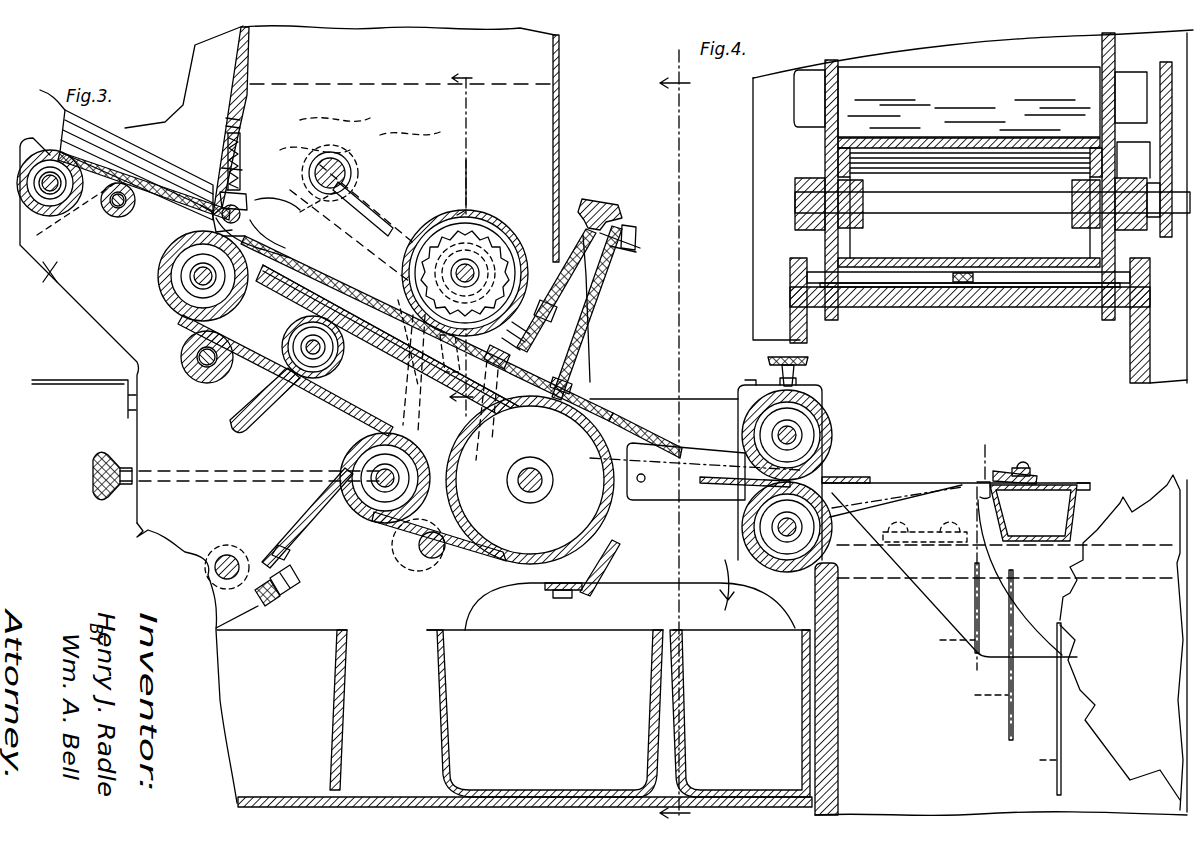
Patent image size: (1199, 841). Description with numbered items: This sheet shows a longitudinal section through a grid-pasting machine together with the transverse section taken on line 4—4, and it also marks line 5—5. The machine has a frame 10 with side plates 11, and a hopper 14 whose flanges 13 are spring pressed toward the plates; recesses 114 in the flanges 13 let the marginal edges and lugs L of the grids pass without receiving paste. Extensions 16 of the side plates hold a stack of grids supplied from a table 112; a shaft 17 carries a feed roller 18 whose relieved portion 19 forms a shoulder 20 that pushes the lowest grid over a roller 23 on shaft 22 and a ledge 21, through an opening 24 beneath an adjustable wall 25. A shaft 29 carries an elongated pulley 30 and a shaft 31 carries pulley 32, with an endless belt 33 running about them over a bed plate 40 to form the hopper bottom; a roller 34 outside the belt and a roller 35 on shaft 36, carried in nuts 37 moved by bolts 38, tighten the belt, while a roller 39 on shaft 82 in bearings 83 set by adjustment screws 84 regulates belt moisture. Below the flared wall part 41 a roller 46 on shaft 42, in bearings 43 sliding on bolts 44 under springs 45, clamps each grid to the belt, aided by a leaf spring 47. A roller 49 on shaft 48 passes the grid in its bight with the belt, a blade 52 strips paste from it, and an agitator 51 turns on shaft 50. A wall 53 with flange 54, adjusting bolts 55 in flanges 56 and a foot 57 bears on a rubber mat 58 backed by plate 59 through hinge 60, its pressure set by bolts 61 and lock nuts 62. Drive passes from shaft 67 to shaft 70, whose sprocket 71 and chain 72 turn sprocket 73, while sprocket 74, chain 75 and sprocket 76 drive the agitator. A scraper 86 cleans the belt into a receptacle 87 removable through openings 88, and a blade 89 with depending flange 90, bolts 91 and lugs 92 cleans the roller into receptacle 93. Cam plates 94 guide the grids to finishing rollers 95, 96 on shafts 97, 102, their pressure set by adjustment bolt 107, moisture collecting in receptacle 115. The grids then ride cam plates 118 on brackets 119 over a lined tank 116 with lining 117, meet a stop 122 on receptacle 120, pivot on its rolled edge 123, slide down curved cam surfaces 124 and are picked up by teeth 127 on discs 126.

In FIG. 3, the section line 4— 4 is at (459, 238).
In FIG. 3, the section line 5— 5 is at (679, 427).
In FIG. 3, the frame 10 is at (643, 570).
In FIG. 3, the side plates 11 is at (187, 663).
In FIG. 4, the flanges 13 is at (805, 250).
In FIG. 3, the hopper 14 is at (562, 116).
In FIG. 4, the hopper 14 is at (1120, 55).
In FIG. 3, the extensions 16 is at (50, 280).
In FIG. 3, the shaft 17 is at (47, 196).
In FIG. 3, the feed roller 18 is at (52, 200).
In FIG. 3, the relieved portion 19 is at (78, 207).
In FIG. 3, the shoulder 20 is at (60, 152).
In FIG. 3, the ledge 21 is at (185, 210).
In FIG. 3, the shaft 22 is at (110, 213).
In FIG. 3, the roller 23 is at (116, 208).
In FIG. 3, the opening 24 is at (222, 212).
In FIG. 3, the wall 25 is at (225, 68).
In FIG. 3, the shaft 29 is at (190, 285).
In FIG. 3, the elongated pulley 30 is at (158, 282).
In FIG. 3, the shaft 31 is at (528, 495).
In FIG. 3, the elongated pulley 32 is at (503, 402).
In FIG. 3, the endless belt 33 is at (398, 352).
In FIG. 4, the endless belt 33 is at (1055, 307).
In FIG. 3, the roller 34 is at (215, 380).
In FIG. 3, the roller 35 is at (295, 334).
In FIG. 3, the shaft 36 is at (300, 347).
In FIG. 3, the nuts 37 is at (305, 315).
In FIG. 3, the adjustment bolts 38 is at (278, 405).
In FIG. 3, the roller 39 is at (345, 470).
In FIG. 3, the bed plate 40 is at (400, 340).
In FIG. 4, the bed plate 40 is at (1005, 307).
In FIG. 3, the inwardly flared part 41 is at (279, 204).
In FIG. 3, the shaft 42 is at (220, 196).
In FIG. 3, the bearings 43 is at (224, 170).
In FIG. 3, the bolts 44 is at (228, 124).
In FIG. 3, the springs 45 is at (226, 140).
In FIG. 3, the roller 46 is at (255, 215).
In FIG. 3, the leaf spring 47 is at (312, 248).
In FIG. 3, the shaft 48 is at (478, 262).
In FIG. 4, the shaft 48 is at (1000, 138).
In FIG. 3, the roller 49 is at (470, 220).
In FIG. 3, the shaft 50 is at (330, 158).
In FIG. 3, the agitator 51 is at (385, 228).
In FIG. 4, the agitator 51 is at (1048, 78).
In FIG. 3, the blade 52 is at (451, 363).
In FIG. 4, the blade 52 is at (1040, 272).
In FIG. 3, the wall 53 is at (530, 336).
In FIG. 3, the flange 54 is at (632, 255).
In FIG. 3, the adjusting bolts 55 is at (600, 200).
In FIG. 3, the flanges 56 is at (578, 290).
In FIG. 3, the foot 57 is at (552, 314).
In FIG. 3, the mat 58 is at (600, 400).
In FIG. 3, the plate 59 is at (574, 387).
In FIG. 3, the hinge 60 is at (512, 358).
In FIG. 3, the adjusting bolts 61 is at (597, 310).
In FIG. 3, the lock nuts 62 is at (638, 240).
In FIG. 3, the shaft 67 is at (238, 555).
In FIG. 3, the shaft 70 is at (428, 560).
In FIG. 3, the sprocket 71 is at (470, 470).
In FIG. 3, the chain 72 is at (420, 416).
In FIG. 3, the sprocket 73 is at (419, 344).
In FIG. 3, the sprocket 74 is at (453, 202).
In FIG. 3, the chain 75 is at (458, 174).
In FIG. 4, the chain 75 is at (1160, 135).
In FIG. 3, the sprocket 76 is at (360, 135).
In FIG. 3, the shaft 82 is at (385, 510).
In FIG. 3, the bearings 83 is at (358, 452).
In FIG. 3, the adjustment screws 84 is at (125, 466).
In FIG. 3, the scraper 86 is at (610, 585).
In FIG. 3, the receptacle 87 is at (445, 736).
In FIG. 3, the openings 88 is at (720, 573).
In FIG. 3, the blade 89 is at (300, 520).
In FIG. 3, the depending flange 90 is at (280, 596).
In FIG. 3, the adjustment bolts 91 is at (292, 552).
In FIG. 3, the lugs 92 is at (300, 576).
In FIG. 3, the receptacle 93 is at (335, 720).
In FIG. 3, the cam plates 94 is at (670, 488).
In FIG. 3, the roller 95 is at (738, 430).
In FIG. 3, the roller 96 is at (745, 540).
In FIG. 3, the shaft 97 is at (800, 430).
In FIG. 3, the shaft 102 is at (775, 545).
In FIG. 3, the adjustment bolt 107 is at (796, 372).
In FIG. 3, the table 112 is at (115, 380).
In FIG. 4, the recesses 114 is at (822, 307).
In FIG. 3, the receptacle 115 is at (770, 630).
In FIG. 3, the lined tank 116 is at (840, 770).
In FIG. 3, the lining 117 is at (840, 725).
In FIG. 3, the cam plates 118 is at (890, 482).
In FIG. 3, the brackets 119 is at (920, 530).
In FIG. 3, the receptacle 120 is at (1085, 500).
In FIG. 3, the stop 122 is at (1040, 476).
In FIG. 3, the rolled edge 123 is at (965, 545).
In FIG. 3, the curved cam surfaces 124 is at (1000, 558).
In FIG. 3, the discs 126 is at (1100, 745).
In FIG. 3, the teeth 127 is at (1090, 560).
In FIG. 3, the lug L is at (1042, 572).